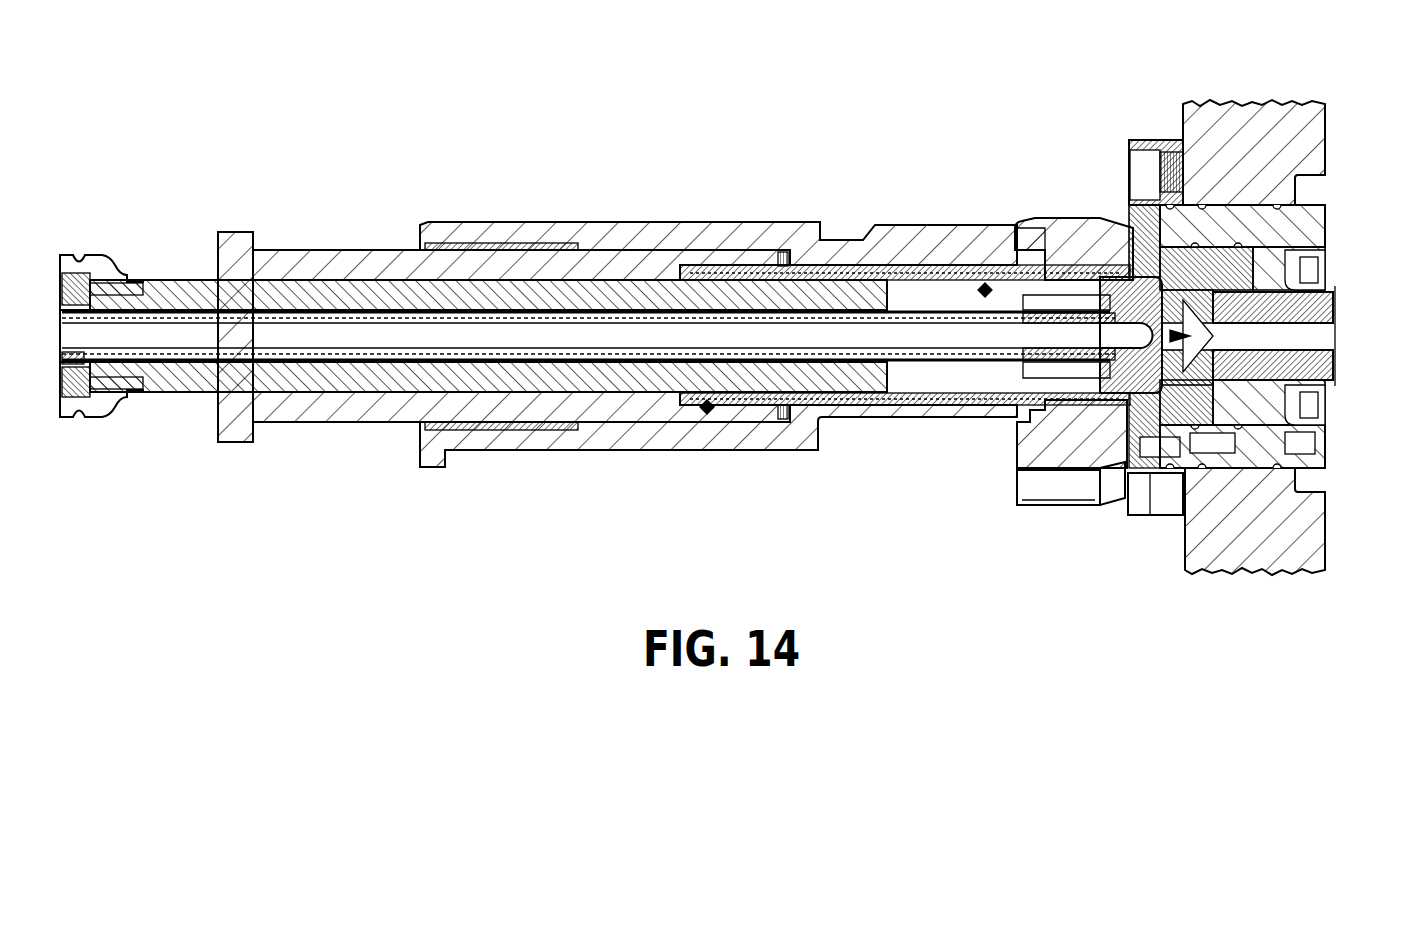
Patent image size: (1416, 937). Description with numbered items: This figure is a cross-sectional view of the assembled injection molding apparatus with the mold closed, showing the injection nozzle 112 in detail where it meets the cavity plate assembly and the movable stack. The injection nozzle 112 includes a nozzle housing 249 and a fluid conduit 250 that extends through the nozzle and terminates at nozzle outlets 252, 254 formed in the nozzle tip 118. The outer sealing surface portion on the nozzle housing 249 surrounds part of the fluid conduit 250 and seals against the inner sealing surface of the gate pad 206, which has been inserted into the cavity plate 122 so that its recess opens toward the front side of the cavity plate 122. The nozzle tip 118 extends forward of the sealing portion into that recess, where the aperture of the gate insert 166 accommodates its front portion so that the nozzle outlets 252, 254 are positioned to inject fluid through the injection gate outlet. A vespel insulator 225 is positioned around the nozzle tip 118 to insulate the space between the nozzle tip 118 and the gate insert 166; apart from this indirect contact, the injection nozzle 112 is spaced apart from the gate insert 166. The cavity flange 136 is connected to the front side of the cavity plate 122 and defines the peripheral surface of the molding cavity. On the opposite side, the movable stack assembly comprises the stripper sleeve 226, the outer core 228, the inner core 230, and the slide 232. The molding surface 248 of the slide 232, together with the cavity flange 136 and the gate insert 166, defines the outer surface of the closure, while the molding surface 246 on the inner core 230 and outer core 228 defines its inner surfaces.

The injection nozzle 112 is at (1336, 296).
The nozzle tip 118 is at (1213, 300).
The cavity plate 122 is at (1198, 125).
The cavity flange 136 is at (1128, 230).
The gate insert 166 is at (1232, 270).
The gate pad 206 is at (1315, 210).
The vespel insulator 225 is at (1213, 300).
The stripper sleeve 226 is at (700, 222).
The outer core 228 is at (388, 262).
The inner core 230 is at (188, 284).
The slide 232 is at (1070, 222).
The molding surface 246 is at (1030, 223).
The molding surface 248 is at (1083, 365).
The nozzle housing 249 is at (1310, 388).
The fluid conduit 250 is at (1298, 343).
The nozzle outlet 252 is at (1118, 462).
The nozzle outlet 254 is at (1130, 228).